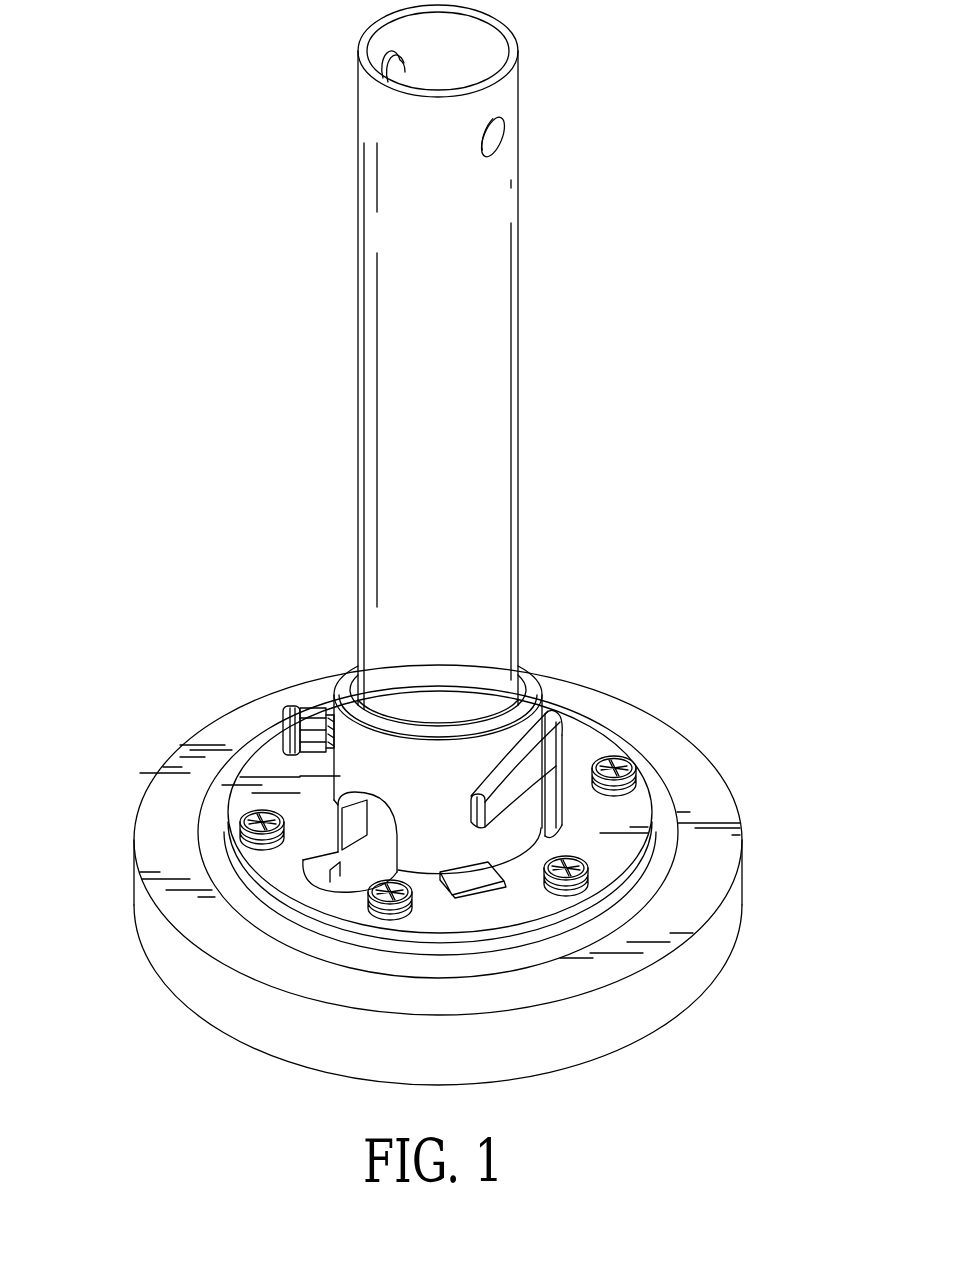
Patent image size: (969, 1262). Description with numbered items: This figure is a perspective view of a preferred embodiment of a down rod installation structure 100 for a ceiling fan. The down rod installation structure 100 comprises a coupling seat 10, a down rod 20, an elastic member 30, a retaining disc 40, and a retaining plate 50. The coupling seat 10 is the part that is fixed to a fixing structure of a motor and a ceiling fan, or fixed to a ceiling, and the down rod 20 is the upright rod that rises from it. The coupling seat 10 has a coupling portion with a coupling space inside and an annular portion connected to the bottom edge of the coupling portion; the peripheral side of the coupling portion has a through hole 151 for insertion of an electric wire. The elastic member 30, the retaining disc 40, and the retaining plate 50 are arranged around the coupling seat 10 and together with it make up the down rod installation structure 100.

The down rod installation structure 100 is at (643, 187).
The coupling seat 10 is at (342, 658).
The down rod 20 is at (518, 363).
The elastic member 30 is at (562, 722).
The retaining disc 40 is at (720, 767).
The retaining plate 50 is at (605, 730).
The through hole 151 is at (378, 849).